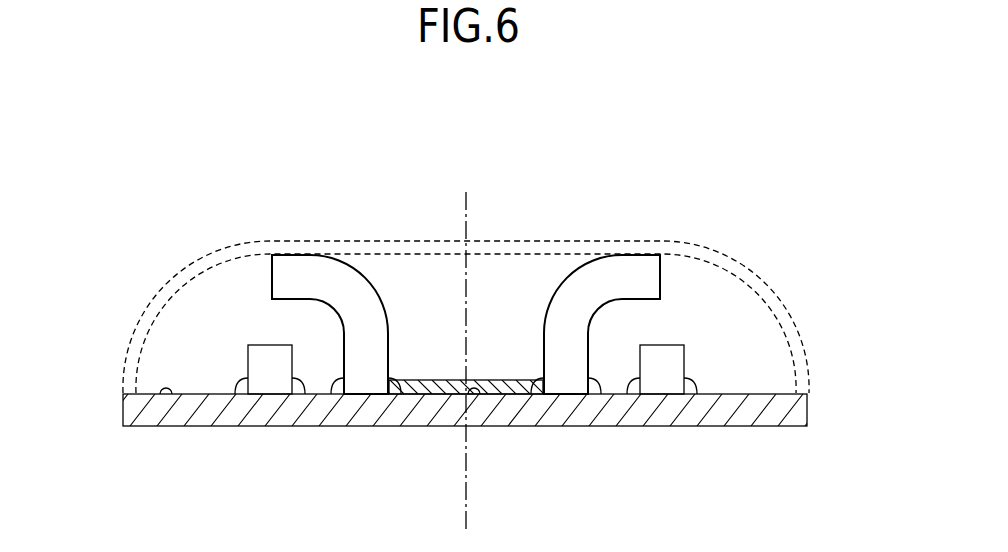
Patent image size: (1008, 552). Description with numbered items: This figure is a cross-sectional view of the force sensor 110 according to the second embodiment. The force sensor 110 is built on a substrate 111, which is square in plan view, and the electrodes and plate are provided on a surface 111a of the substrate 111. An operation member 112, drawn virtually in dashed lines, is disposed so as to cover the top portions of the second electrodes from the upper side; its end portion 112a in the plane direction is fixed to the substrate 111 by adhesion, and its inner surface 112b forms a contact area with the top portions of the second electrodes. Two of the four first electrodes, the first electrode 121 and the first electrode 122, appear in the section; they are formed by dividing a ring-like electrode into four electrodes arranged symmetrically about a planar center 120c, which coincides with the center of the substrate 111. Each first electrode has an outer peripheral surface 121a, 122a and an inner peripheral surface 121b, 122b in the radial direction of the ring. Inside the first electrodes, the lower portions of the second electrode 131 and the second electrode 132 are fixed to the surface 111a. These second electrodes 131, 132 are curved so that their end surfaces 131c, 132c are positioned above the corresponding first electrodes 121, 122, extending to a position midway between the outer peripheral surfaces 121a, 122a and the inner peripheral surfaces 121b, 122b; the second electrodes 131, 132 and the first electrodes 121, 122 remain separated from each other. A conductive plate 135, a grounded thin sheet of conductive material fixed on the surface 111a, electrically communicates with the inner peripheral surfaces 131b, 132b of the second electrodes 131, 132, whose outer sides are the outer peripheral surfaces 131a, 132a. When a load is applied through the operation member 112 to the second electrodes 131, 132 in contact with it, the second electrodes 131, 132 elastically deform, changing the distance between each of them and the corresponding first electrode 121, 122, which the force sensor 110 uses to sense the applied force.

The force sensor 110 is at (812, 444).
The substrate 111 is at (798, 410).
The surface of the substrate 111a is at (165, 396).
The operation member 112 is at (463, 283).
The end portion of the operation member 112a is at (128, 357).
The inner surface of the operation member 112b is at (163, 308).
The planar center 120c is at (481, 399).
The first electrode 121 is at (270, 387).
The outer peripheral surface of the first electrode 121a is at (234, 392).
The inner peripheral surface of the first electrode 121b is at (298, 394).
The first electrode 122 is at (660, 387).
The outer peripheral surface of the first electrode 122a is at (696, 394).
The inner peripheral surface of the first electrode 122b is at (633, 397).
The second electrode 131 is at (372, 278).
The outer peripheral surface of the second electrode 131a is at (340, 397).
The inner peripheral surface of the second electrode 131b is at (396, 397).
The end surface of the second electrode 131c is at (272, 277).
The second electrode 132 is at (560, 278).
The outer peripheral surface of the second electrode 132a is at (589, 396).
The inner peripheral surface of the second electrode 132b is at (537, 397).
The end surface of the second electrode 132c is at (660, 277).
The conductive plate 135 is at (496, 384).